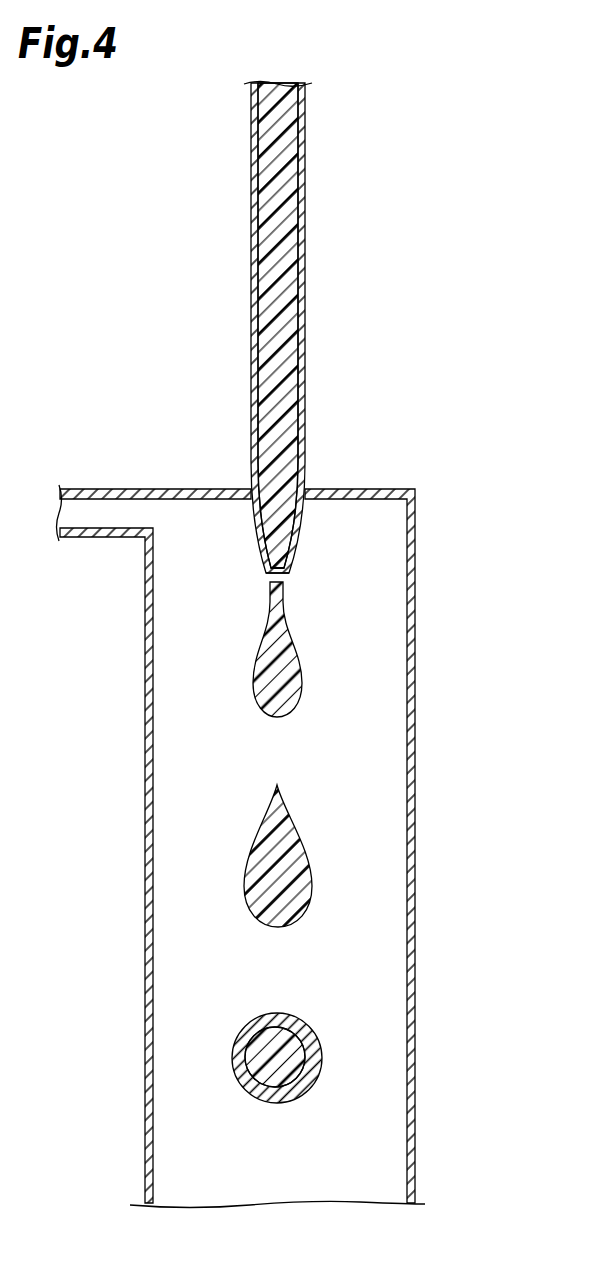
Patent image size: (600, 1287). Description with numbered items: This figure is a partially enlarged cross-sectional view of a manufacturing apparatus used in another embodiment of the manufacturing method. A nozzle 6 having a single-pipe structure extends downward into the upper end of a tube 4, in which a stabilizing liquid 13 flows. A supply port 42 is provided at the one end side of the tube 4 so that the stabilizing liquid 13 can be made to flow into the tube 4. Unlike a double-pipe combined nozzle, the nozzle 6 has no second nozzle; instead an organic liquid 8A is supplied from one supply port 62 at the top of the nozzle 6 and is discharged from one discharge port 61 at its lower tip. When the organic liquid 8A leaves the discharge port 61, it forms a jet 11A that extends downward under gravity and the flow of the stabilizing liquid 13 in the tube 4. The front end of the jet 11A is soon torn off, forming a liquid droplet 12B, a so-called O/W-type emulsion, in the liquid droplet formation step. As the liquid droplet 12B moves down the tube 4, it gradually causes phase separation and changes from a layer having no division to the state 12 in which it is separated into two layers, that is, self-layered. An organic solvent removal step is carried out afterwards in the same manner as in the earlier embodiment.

The tube 4 is at (241, 846).
The supply port 42 is at (103, 538).
The nozzle 6 is at (324, 328).
The discharge port 61 is at (290, 569).
The supply port 62 is at (300, 108).
The organic liquid 8A is at (283, 198).
The jet 11A is at (305, 650).
The liquid droplet 12B is at (312, 866).
The state of being separated into two layers 12 is at (322, 1058).
The stabilizing liquid 13 is at (183, 770).